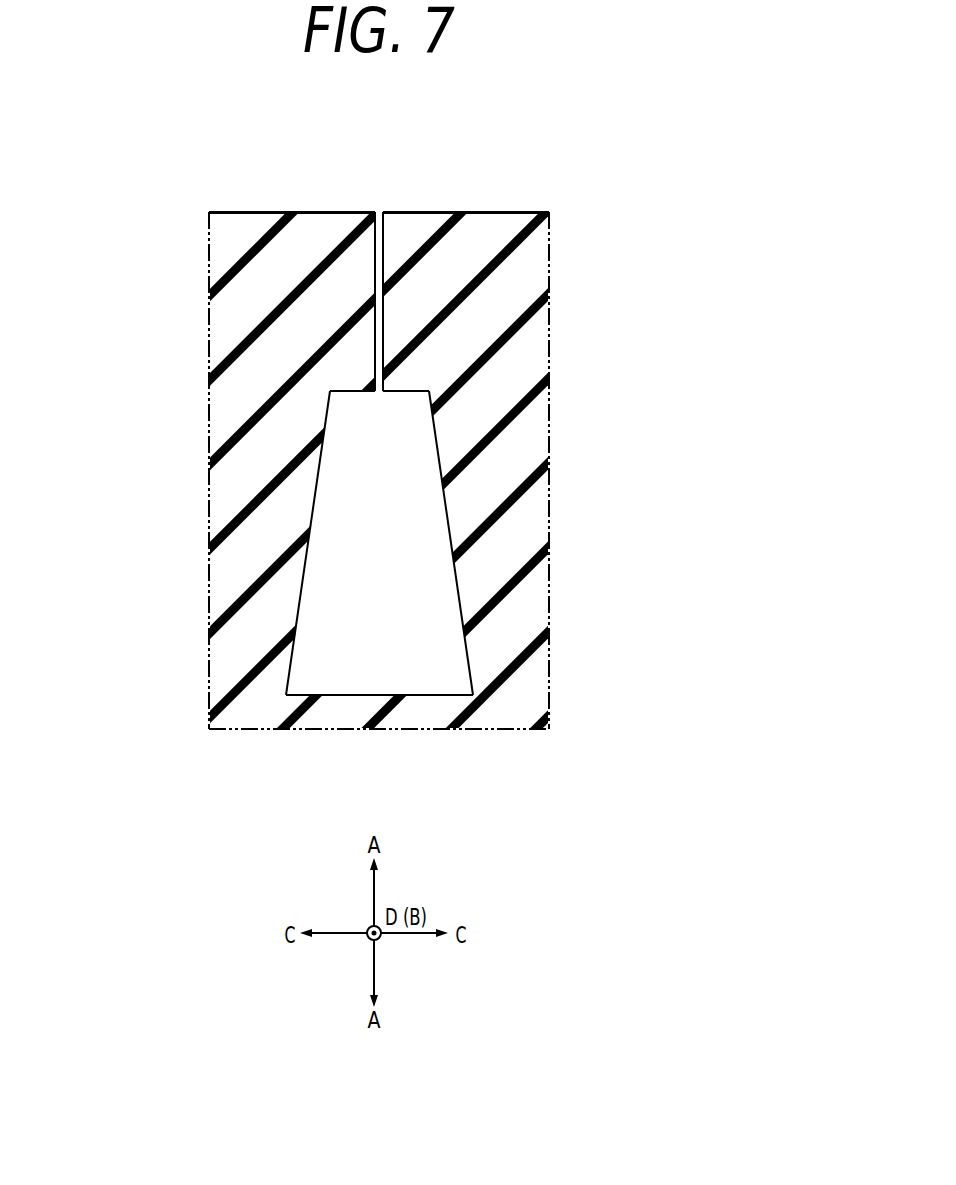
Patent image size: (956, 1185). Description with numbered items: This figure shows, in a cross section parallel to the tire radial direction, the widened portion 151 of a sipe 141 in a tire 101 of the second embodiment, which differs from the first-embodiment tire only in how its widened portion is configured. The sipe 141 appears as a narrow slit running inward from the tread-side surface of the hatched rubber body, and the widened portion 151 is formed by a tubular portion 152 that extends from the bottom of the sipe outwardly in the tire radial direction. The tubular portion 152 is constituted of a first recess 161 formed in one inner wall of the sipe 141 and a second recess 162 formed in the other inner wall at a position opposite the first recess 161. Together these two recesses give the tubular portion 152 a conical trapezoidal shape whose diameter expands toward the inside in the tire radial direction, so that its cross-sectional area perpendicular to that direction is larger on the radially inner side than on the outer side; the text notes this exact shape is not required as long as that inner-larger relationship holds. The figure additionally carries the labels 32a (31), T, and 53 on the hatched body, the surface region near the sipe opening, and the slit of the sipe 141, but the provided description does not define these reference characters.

The tire 101 is at (517, 162).
The member 31 is at (478, 470).
The surface of member 32a is at (228, 323).
The thickness direction reference T is at (255, 211).
The sipe 141 is at (378, 210).
The gap 53 is at (375, 257).
The widened portion 151 is at (379, 588).
The tubular portion 152 is at (355, 667).
The first recess 161 is at (447, 518).
The second recess 162 is at (317, 498).